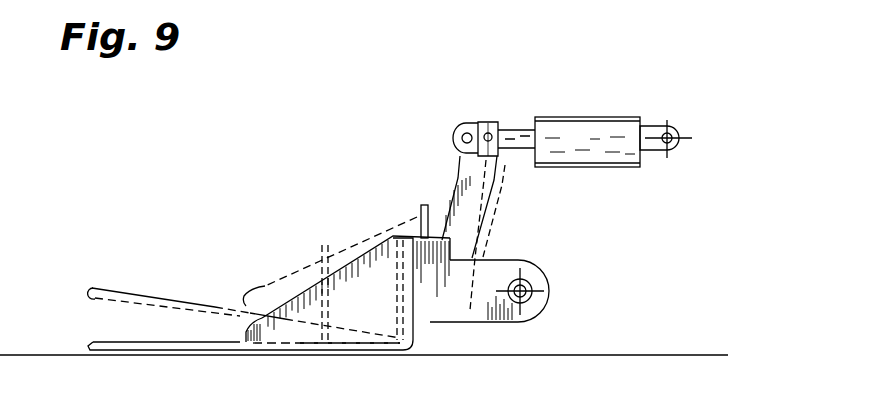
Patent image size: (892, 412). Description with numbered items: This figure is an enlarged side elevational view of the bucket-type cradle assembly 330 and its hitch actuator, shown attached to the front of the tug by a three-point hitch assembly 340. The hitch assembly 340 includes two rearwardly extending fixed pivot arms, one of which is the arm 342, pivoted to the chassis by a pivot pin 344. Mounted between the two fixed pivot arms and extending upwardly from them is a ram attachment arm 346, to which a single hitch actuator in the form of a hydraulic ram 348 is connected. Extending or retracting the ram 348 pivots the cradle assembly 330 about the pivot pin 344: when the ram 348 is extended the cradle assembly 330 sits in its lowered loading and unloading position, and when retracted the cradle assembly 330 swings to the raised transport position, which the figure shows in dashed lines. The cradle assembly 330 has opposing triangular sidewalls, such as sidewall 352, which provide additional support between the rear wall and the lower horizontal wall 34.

The lower horizontal wall 34 is at (151, 310).
The cradle assembly 330 is at (298, 215).
The 3-point hitch assembly 340 is at (511, 98).
The arm 342 is at (415, 310).
The pivot pin 344 is at (532, 285).
The ram attachment arm 346 is at (433, 224).
The hydraulic ram 348 is at (588, 123).
The sidewall 352 is at (355, 304).